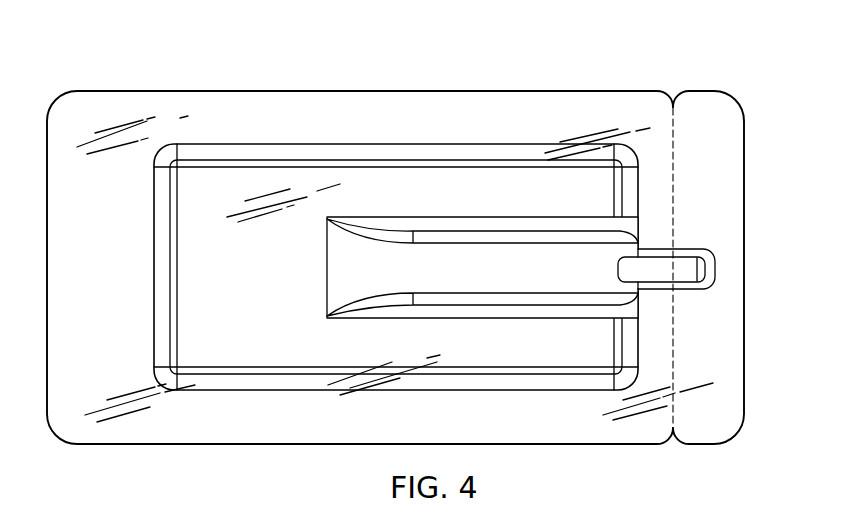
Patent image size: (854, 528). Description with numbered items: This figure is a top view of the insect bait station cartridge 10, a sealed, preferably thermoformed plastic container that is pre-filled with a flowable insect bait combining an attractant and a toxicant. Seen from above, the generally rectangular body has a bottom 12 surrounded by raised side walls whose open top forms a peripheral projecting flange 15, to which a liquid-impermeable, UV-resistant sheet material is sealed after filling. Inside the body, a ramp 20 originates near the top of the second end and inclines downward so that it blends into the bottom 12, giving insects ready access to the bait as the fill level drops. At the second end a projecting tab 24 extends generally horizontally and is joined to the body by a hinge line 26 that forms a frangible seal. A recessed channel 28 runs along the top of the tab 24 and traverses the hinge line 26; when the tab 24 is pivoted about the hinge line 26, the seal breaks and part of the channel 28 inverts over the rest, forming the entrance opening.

The cartridge 10 is at (184, 74).
The bottom 12 is at (258, 282).
The peripheral projecting flange 15 is at (107, 108).
The ramp 20 is at (518, 282).
The projecting tab 24 is at (730, 162).
The hinge line 26 is at (673, 135).
The recessed channel 28 is at (683, 272).